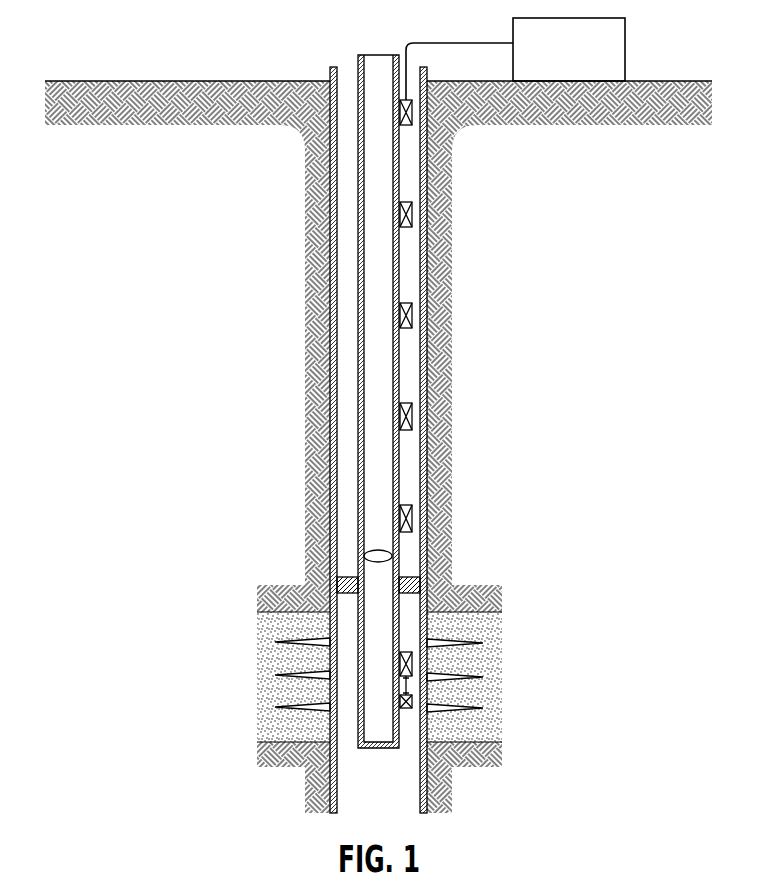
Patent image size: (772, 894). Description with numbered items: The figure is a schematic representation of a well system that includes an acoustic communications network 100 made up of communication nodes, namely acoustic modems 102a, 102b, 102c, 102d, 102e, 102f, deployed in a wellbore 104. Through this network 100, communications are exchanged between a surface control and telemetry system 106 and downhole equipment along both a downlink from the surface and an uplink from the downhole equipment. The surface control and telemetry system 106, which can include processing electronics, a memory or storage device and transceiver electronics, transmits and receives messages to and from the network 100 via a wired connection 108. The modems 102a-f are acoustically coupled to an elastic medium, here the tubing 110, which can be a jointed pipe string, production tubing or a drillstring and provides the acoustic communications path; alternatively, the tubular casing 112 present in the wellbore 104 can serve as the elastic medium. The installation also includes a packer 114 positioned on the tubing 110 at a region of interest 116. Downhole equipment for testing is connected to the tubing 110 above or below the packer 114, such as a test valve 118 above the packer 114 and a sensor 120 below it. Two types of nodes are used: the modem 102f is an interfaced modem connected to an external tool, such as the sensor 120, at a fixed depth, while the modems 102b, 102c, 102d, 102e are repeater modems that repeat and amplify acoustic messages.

The network 100 is at (590, 234).
The communication node 102a is at (412, 113).
The communication node 102b is at (412, 215).
The communication node 102c is at (412, 316).
The communication node 102d is at (412, 416).
The communication node 102e is at (412, 518).
The communication node 102f is at (412, 666).
The wellbore 104 is at (330, 279).
The surface control and telemetry system 106 is at (590, 63).
The wired connection 108 is at (476, 42).
The tubing 110 is at (358, 372).
The tubular casing 112 is at (334, 204).
The packer 114 is at (412, 577).
The region of interest 116 is at (262, 659).
The test valve 118 is at (366, 551).
The sensor 120 is at (412, 702).